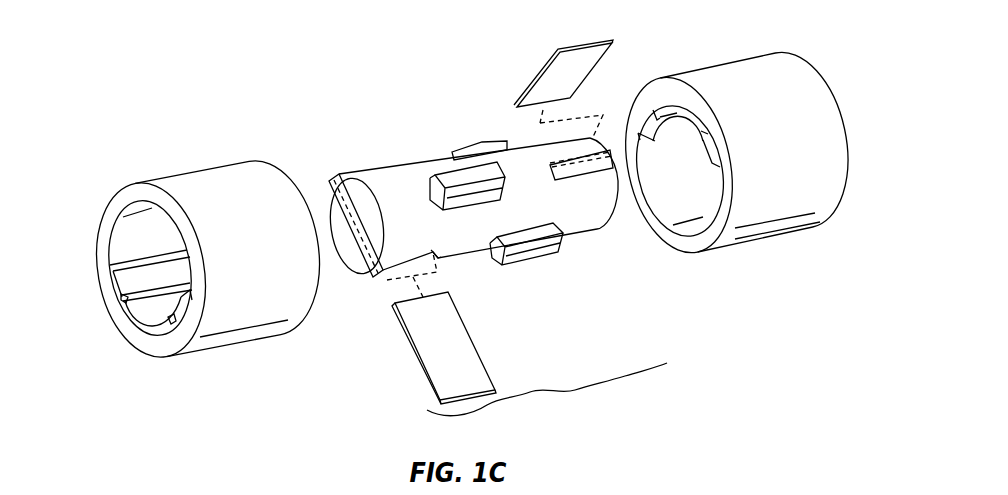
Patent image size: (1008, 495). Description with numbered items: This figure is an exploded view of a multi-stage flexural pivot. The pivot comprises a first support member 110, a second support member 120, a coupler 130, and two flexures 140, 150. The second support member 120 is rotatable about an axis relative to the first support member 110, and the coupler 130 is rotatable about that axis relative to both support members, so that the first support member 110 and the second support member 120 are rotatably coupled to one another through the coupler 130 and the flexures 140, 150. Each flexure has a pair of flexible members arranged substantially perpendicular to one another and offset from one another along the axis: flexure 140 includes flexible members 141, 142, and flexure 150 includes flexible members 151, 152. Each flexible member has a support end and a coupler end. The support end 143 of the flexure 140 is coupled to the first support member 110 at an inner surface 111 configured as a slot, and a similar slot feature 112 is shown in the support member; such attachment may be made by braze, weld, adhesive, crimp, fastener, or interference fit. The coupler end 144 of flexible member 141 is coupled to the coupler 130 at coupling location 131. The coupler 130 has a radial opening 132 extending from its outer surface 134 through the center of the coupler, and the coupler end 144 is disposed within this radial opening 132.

The first support member 110 is at (200, 172).
The inner surface 111 is at (172, 325).
The engaging tab 112 is at (122, 300).
The second support member 120 is at (737, 63).
The coupler 130 is at (468, 193).
The coupling location 131 is at (335, 178).
The radial opening 132 is at (362, 262).
The outer surface 134 is at (403, 249).
The flexure 140 is at (416, 362).
The flexible member 141 is at (413, 350).
The flexible member 142 is at (430, 180).
The support end 143 is at (437, 402).
The coupler end 144 is at (395, 305).
The flexure 150 is at (547, 389).
The flexible member 151 is at (480, 150).
The flexible member 152 is at (588, 43).